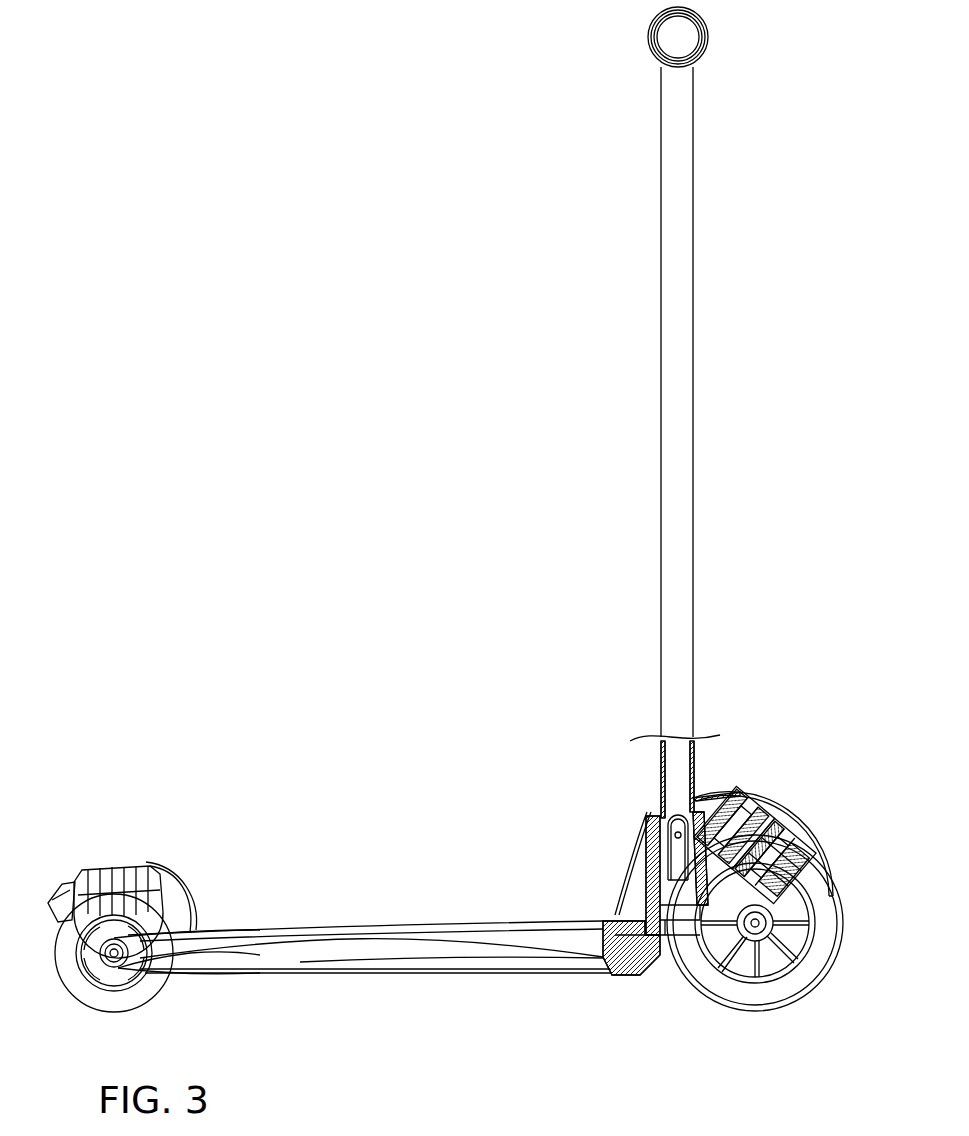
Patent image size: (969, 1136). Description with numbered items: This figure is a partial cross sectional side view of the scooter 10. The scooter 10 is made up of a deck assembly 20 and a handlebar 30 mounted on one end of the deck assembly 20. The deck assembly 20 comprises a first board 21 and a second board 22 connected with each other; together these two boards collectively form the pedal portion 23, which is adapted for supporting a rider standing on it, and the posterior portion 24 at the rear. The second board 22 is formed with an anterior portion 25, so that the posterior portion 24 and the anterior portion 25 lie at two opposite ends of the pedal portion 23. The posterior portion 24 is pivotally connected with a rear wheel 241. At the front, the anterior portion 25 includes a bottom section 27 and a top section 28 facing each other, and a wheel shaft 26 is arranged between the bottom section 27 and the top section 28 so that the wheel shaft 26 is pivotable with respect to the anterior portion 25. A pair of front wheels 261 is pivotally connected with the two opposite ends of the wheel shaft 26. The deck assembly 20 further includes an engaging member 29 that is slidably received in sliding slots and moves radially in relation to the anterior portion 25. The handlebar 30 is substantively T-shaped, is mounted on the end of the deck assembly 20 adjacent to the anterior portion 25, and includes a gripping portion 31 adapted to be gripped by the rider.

The scooter 10 is at (291, 183).
The deck assembly 20 is at (270, 853).
The first board 21 is at (552, 970).
The second board 22 is at (566, 933).
The pedal portion 23 is at (419, 887).
The posterior portion 24 is at (183, 999).
The rear wheel 241 is at (148, 1003).
The anterior portion 25 is at (811, 808).
The wheel shaft 26 is at (809, 962).
The front wheels 261 is at (712, 985).
The bottom section 27 is at (782, 945).
The top section 28 is at (802, 845).
The engaging member 29 is at (776, 810).
The handlebar 30 is at (678, 218).
The gripping portion 31 is at (655, 42).